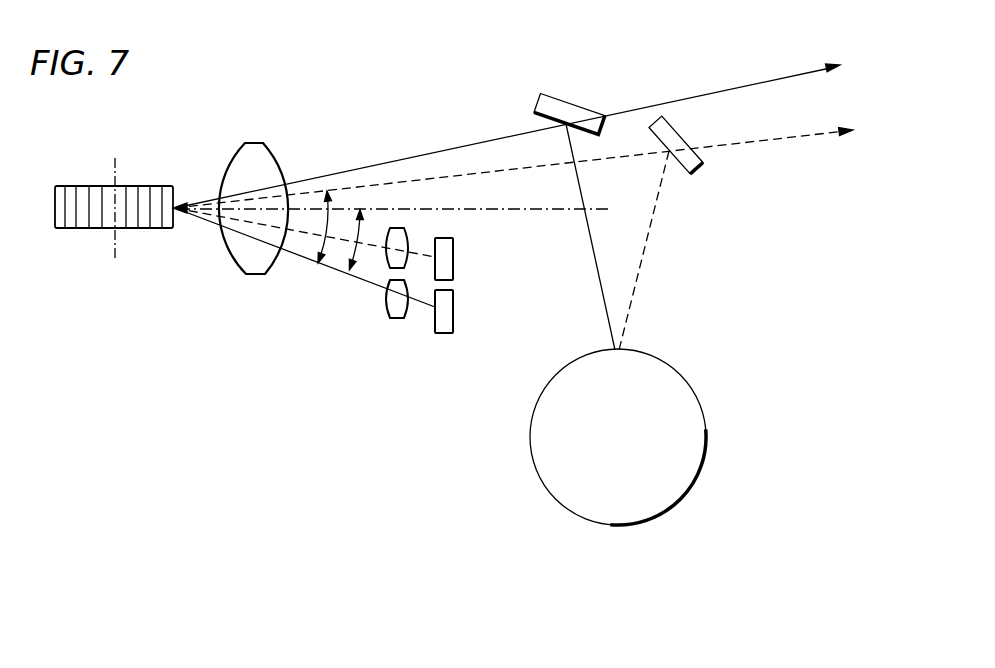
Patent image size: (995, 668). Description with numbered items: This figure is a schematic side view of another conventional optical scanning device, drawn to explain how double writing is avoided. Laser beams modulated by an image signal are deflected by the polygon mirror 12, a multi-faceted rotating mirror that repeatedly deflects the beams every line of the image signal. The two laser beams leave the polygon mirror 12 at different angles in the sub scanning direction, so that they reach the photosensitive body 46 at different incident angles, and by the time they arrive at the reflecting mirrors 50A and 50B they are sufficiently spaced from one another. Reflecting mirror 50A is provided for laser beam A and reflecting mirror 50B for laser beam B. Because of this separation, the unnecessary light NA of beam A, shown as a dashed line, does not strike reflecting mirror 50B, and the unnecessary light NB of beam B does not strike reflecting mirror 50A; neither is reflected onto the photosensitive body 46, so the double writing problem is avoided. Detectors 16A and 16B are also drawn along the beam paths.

The polygon mirror 12 is at (134, 192).
The photodetector 16A is at (456, 255).
The photodetector 16B is at (456, 307).
The reflecting mirror 50A is at (677, 124).
The reflecting mirror 50B is at (570, 100).
The photosensitive body 46 is at (708, 429).
The unnecessary light NA is at (795, 128).
The unnecessary light NB is at (738, 85).